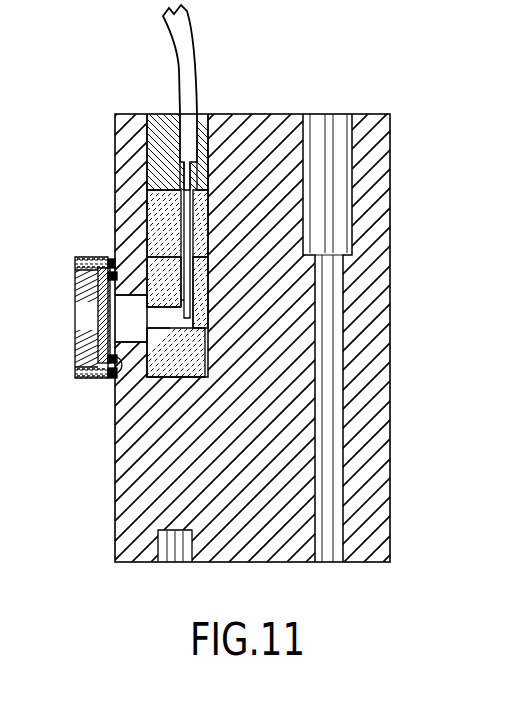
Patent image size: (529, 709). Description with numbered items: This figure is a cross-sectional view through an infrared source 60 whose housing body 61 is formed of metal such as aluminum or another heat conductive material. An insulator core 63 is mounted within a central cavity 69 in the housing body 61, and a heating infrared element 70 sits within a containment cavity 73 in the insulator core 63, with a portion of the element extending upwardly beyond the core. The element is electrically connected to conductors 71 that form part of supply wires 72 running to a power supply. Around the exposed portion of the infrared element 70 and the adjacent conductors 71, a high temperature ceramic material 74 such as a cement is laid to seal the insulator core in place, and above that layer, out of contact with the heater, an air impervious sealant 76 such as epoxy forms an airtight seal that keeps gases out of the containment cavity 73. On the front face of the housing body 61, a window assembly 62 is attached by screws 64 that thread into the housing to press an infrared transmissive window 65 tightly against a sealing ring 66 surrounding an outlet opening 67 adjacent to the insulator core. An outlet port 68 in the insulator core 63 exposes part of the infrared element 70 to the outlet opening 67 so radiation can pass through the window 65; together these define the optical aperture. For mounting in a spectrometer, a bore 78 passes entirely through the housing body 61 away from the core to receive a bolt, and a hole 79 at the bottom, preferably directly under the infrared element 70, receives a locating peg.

The infrared source 60 is at (378, 108).
The housing body 61 is at (390, 322).
The window assembly 62 is at (100, 257).
The insulator core 63 is at (205, 342).
The screws 64 is at (75, 258).
The infrared transmissive window 65 is at (98, 318).
The sealing ring 66 is at (115, 380).
The outlet opening 67 is at (114, 268).
The outlet port 68 is at (165, 320).
The central cavity 69 is at (141, 346).
The infrared element 70 is at (206, 283).
The conductors 71 is at (208, 202).
The supply wires 72 is at (198, 68).
The containment cavity 73 is at (206, 270).
The high temperature ceramic material 74 is at (150, 228).
The air impervious sealant 76 is at (160, 112).
The bore 78 is at (355, 170).
The hole 79 is at (178, 558).